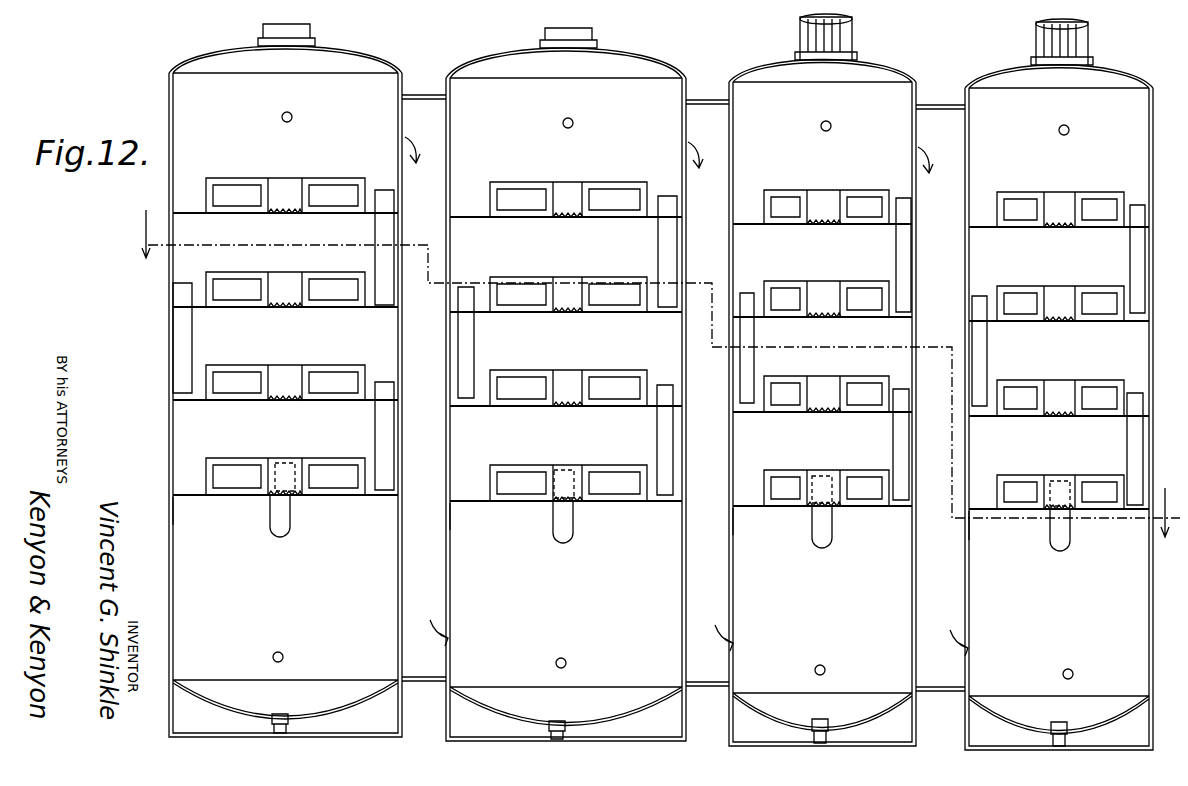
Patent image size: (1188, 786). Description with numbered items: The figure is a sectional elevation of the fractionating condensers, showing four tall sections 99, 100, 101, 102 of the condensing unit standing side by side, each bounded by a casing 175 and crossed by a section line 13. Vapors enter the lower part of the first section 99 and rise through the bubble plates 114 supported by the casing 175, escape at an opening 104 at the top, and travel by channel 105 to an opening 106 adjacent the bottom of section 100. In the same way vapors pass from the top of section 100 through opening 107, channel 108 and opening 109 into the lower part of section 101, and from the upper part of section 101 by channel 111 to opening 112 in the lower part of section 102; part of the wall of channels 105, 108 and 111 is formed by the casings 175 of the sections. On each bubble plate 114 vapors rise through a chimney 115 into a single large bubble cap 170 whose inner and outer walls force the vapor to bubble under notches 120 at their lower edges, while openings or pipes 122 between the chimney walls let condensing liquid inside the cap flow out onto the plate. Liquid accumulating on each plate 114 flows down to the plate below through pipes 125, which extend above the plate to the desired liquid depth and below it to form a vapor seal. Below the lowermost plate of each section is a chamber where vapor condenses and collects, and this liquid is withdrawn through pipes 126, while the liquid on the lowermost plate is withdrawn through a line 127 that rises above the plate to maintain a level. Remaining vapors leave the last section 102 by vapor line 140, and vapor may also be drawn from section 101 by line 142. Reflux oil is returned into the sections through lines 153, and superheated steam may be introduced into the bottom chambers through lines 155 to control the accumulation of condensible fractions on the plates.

The section line 13- 13 is at (656, 373).
The section 99 is at (172, 570).
The section 100 is at (449, 578).
The section 101 is at (732, 583).
The section 102 is at (968, 585).
The opening 104 is at (399, 122).
The channel 105 is at (424, 153).
The opening 106 is at (447, 630).
The opening 107 is at (684, 122).
The channel 108 is at (707, 157).
The opening 109 is at (732, 636).
The channel 111 is at (940, 158).
The opening 112 is at (968, 640).
The bubble plate 114 is at (192, 215).
The chimney 115 is at (318, 488).
The notches 120 is at (287, 310).
The openings or pipes 122 is at (315, 400).
The pipes 125 is at (375, 237).
The pipes 126 is at (286, 735).
The line 127 is at (285, 535).
The vapor line 140 is at (1088, 46).
The line 142 is at (852, 44).
The lines 153 is at (291, 113).
The lines 155 is at (283, 653).
The bubble cap 170 is at (236, 178).
The casing 175 is at (169, 464).